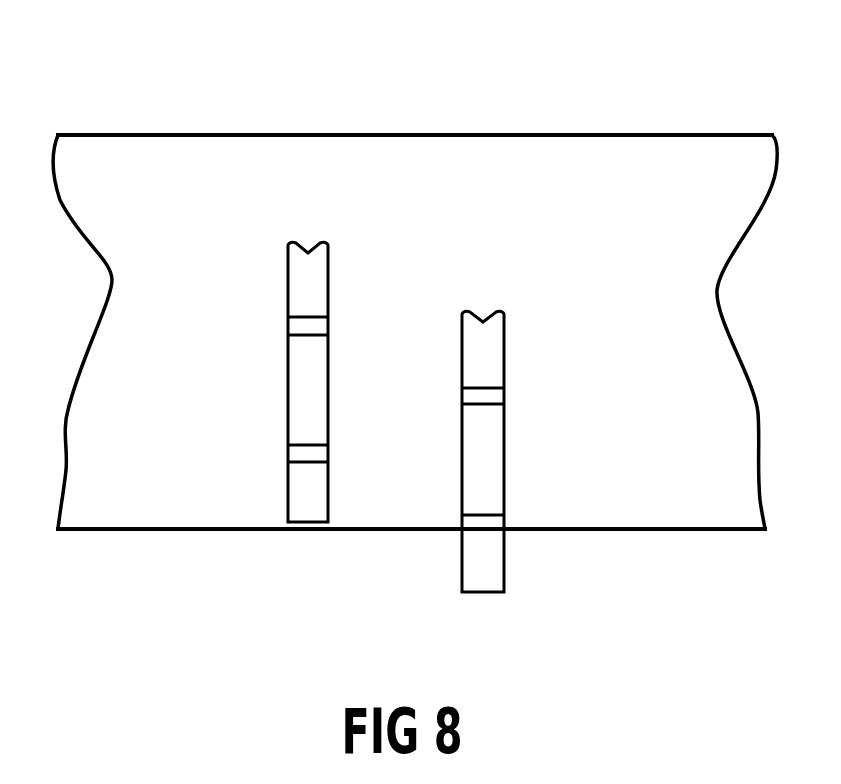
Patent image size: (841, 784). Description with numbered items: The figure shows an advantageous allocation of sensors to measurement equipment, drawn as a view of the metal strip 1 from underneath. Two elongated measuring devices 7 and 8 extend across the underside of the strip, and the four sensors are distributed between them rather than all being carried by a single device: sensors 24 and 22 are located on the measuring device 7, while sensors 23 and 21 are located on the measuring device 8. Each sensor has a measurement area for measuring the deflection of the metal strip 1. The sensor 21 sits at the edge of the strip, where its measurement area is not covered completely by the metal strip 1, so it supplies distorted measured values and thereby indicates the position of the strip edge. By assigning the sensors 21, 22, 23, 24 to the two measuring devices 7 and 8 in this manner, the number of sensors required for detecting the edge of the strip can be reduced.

The metal strip 1 is at (190, 135).
The measuring device 7 is at (309, 251).
The measuring device 8 is at (486, 321).
The sensor 21 is at (488, 523).
The sensor 22 is at (297, 452).
The sensor 23 is at (488, 395).
The sensor 24 is at (298, 327).